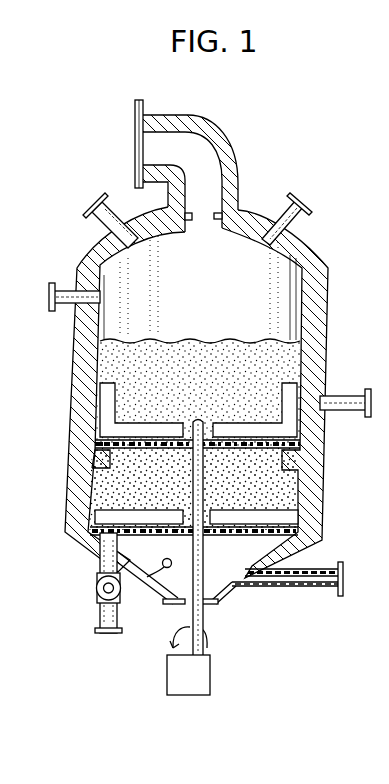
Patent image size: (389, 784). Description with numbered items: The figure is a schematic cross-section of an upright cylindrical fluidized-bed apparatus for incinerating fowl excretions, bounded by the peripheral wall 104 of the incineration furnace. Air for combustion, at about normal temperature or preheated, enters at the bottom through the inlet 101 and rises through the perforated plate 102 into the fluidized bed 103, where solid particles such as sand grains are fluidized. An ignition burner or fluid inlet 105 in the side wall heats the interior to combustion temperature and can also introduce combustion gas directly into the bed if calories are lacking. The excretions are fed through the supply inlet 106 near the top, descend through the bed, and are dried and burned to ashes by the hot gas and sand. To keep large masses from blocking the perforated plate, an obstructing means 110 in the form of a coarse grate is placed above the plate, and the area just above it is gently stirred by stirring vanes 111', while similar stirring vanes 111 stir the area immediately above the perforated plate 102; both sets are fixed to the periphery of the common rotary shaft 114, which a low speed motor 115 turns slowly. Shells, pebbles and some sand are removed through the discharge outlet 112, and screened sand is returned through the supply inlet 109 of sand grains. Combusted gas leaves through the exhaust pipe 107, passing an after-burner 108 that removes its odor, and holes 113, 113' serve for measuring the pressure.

The inlet 101 is at (315, 587).
The perforated plate 102 is at (222, 535).
The fluidized bed 103 is at (285, 488).
The peripheral wall 104 is at (312, 446).
The ignition burner or fluid inlet 105 is at (351, 396).
The supply inlet 106 is at (303, 228).
The combusted gas exhaust pipe 107 is at (232, 150).
The after-burner 108 is at (190, 222).
The supply inlet of sand grains 109 is at (100, 214).
The obstructing means 110 is at (100, 444).
The stirring vanes 111 is at (155, 512).
The stirring vanes 111' is at (154, 410).
The discharge outlet 112 is at (100, 610).
The hole for measuring the pressure 113 is at (149, 582).
The hole for measuring the pressure 113' is at (61, 281).
The rotary shaft 114 is at (188, 614).
The low speed motor 115 is at (211, 679).